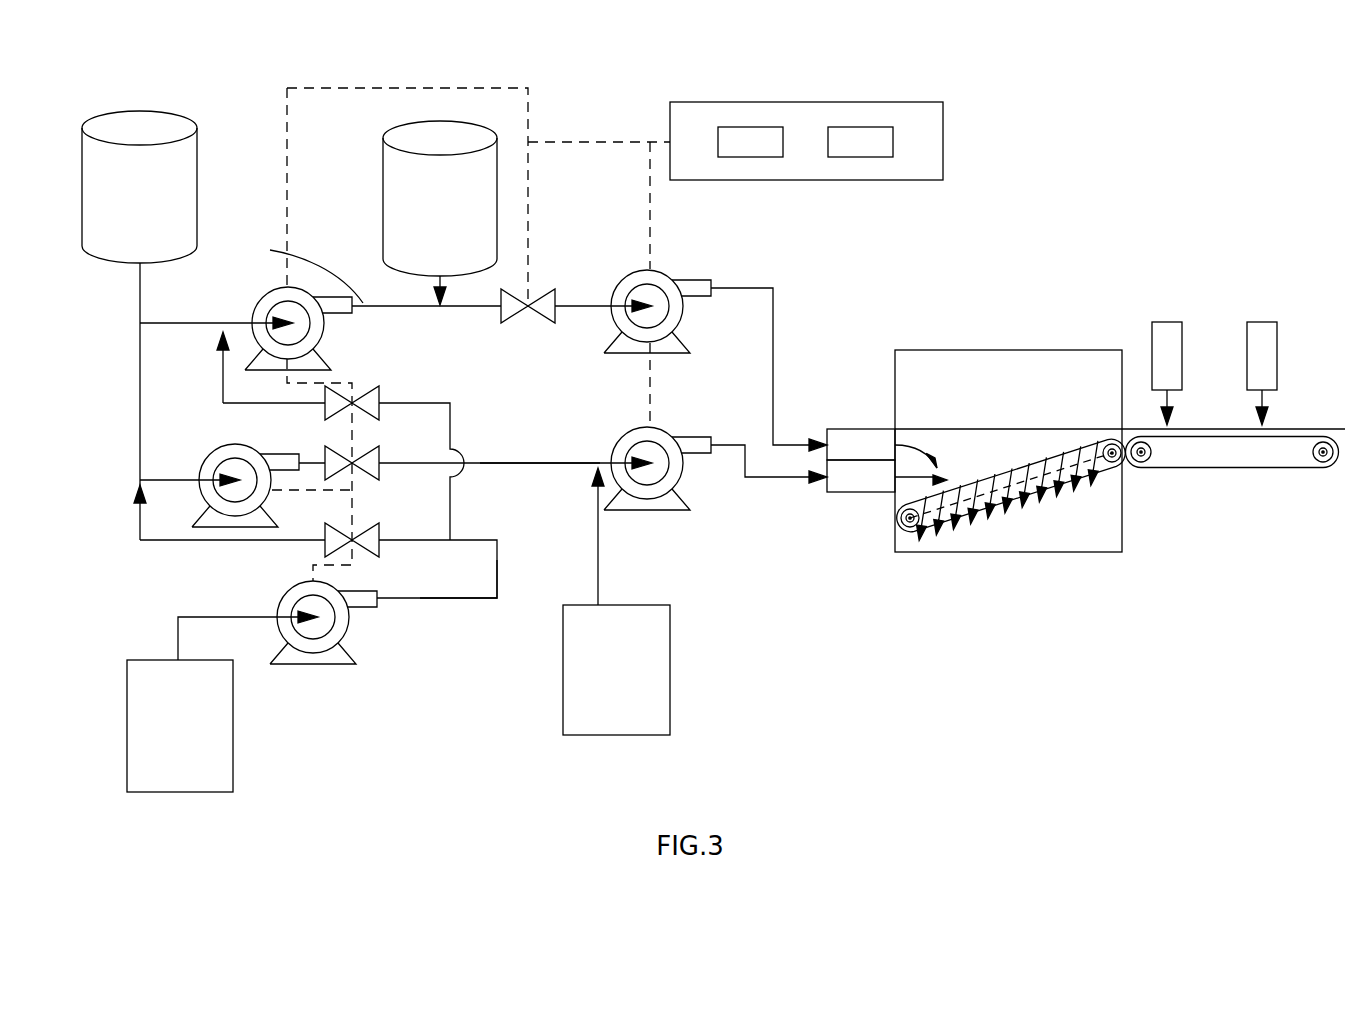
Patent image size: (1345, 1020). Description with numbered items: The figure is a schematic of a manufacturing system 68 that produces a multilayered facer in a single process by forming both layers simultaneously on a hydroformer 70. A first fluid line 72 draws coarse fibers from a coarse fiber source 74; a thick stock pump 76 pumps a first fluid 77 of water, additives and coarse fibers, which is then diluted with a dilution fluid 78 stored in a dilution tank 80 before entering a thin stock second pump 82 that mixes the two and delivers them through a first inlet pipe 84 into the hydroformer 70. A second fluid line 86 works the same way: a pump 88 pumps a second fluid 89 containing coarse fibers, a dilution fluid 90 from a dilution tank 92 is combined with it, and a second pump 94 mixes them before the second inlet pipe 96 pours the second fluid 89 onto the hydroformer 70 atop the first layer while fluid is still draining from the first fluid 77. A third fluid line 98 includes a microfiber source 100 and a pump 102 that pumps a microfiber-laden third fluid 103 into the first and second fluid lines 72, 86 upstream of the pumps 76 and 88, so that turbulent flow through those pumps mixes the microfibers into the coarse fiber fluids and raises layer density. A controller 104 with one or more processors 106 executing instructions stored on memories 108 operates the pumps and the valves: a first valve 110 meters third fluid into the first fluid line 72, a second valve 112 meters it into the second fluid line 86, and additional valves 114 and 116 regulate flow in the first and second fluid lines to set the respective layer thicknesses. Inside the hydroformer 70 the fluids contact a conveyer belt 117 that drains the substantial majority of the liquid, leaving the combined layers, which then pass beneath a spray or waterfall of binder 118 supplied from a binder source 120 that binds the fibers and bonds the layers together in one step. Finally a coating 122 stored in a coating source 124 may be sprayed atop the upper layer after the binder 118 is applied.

The manufacturing system 68 is at (1052, 172).
The hydroformer 70 is at (1029, 572).
The first fluid line 72 is at (394, 725).
The coarse fiber source 74 is at (176, 122).
The pump 76 is at (210, 447).
The first fluid 77 is at (530, 465).
The dilution fluid 78 is at (598, 556).
The dilution tank 80 is at (670, 702).
The second pump 82 is at (676, 508).
The first inlet pipe 84 is at (845, 492).
The second fluid line 86 is at (556, 92).
The pump 88 is at (320, 332).
The second fluid 89 is at (940, 405).
The dilution fluid 90 is at (436, 292).
The dilution tank 92 is at (383, 195).
The second pump 94 is at (662, 270).
The second inlet pipe 96 is at (838, 429).
The third fluid line 98 is at (468, 441).
The microfiber source 100 is at (172, 793).
The pump 102 is at (313, 665).
The third fluid 103 is at (437, 600).
The controller 104 is at (800, 102).
The processor 106 is at (762, 150).
The memory 108 is at (868, 150).
The first valve 110 is at (378, 533).
The second valve 112 is at (378, 398).
The valve 114 is at (378, 456).
The valve 116 is at (540, 289).
The conveyer belt 117 is at (913, 532).
The binder 118 is at (1168, 397).
The binder source 120 is at (1182, 350).
The coating 122 is at (1263, 397).
The coating source 124 is at (1277, 350).